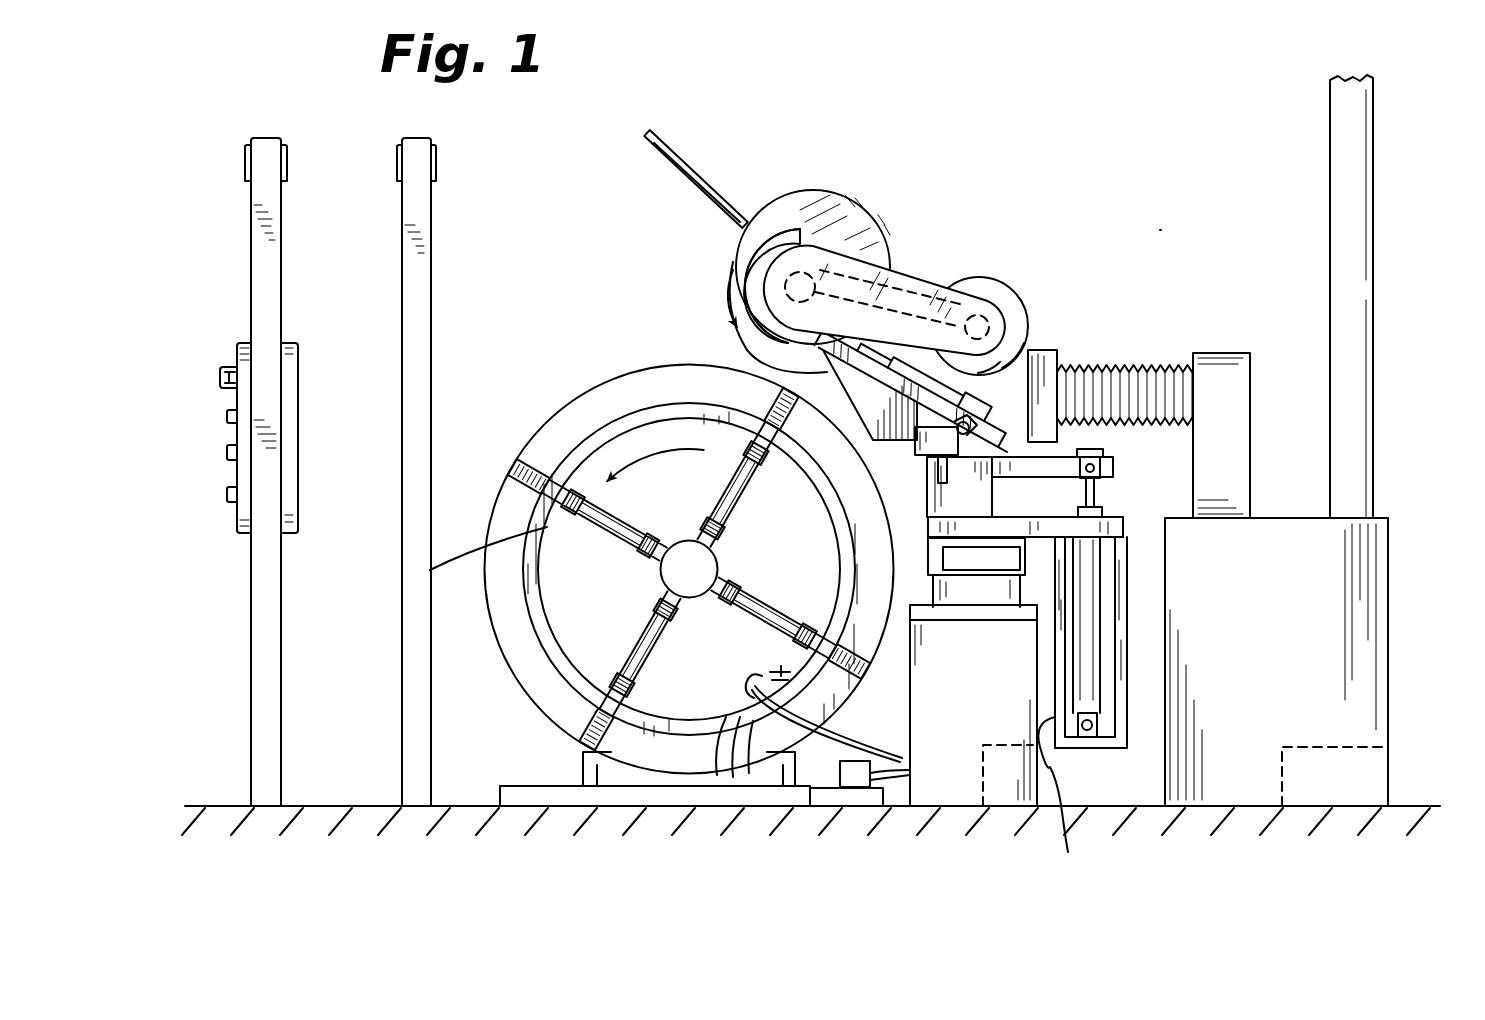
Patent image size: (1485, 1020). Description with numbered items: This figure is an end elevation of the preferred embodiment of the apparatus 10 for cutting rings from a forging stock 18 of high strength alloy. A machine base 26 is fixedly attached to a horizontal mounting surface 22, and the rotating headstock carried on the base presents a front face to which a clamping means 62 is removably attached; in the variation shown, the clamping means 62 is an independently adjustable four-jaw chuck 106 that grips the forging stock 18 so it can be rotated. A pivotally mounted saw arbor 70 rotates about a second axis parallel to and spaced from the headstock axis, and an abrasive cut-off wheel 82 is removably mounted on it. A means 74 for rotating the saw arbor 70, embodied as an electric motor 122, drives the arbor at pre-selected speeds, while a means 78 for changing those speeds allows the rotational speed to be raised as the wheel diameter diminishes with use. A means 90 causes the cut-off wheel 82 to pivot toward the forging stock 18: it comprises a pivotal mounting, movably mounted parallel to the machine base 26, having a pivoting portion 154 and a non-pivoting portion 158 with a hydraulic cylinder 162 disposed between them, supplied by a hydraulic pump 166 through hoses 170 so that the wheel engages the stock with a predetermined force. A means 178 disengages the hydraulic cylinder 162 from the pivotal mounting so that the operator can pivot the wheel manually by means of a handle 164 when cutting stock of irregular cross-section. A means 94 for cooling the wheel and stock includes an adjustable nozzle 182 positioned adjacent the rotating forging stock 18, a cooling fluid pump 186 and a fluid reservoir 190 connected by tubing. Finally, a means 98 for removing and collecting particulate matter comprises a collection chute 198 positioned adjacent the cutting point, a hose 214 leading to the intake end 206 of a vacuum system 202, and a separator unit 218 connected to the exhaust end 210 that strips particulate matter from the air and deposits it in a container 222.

The apparatus 10 is at (1165, 225).
The forging stock 18 is at (615, 423).
The horizontal mounting surface 22 is at (633, 810).
The machine base 26 is at (610, 772).
The clamping means 62 is at (560, 427).
The saw arbor 70 is at (837, 247).
The means for rotating the saw arbor 74 is at (1020, 302).
The means for changing the pre-selected speeds 78 is at (915, 450).
The abrasive cut-off wheel 82 is at (750, 267).
The means for causing the abrasive cut-off wheel to pivot 90 is at (1135, 501).
The means for cooling 94 is at (860, 746).
The means for removing and collecting particulate matter 98 is at (1260, 386).
The four-jaw chuck 106 is at (430, 570).
The electric motor 122 is at (985, 278).
The pivoting portion 154 is at (1038, 462).
The non-pivoting portion 158 is at (1001, 480).
The hydraulic cylinder 162 is at (1093, 690).
The handle 164 is at (723, 188).
The hydraulic pump 166 is at (1010, 765).
The hoses 170 is at (1068, 854).
The means for disengaging the hydraulic cylinder 178 is at (1100, 466).
The nozzle 182 is at (752, 677).
The cooling fluid pump 186 is at (857, 783).
The fluid reservoir 190 is at (827, 803).
The collection chute 198 is at (750, 363).
The vacuum system 202 is at (1300, 668).
The intake end 206 is at (1215, 352).
The exhaust end 210 is at (1372, 405).
The hose 214 is at (1125, 365).
The separator unit 218 is at (1390, 688).
The container 222 is at (1344, 793).